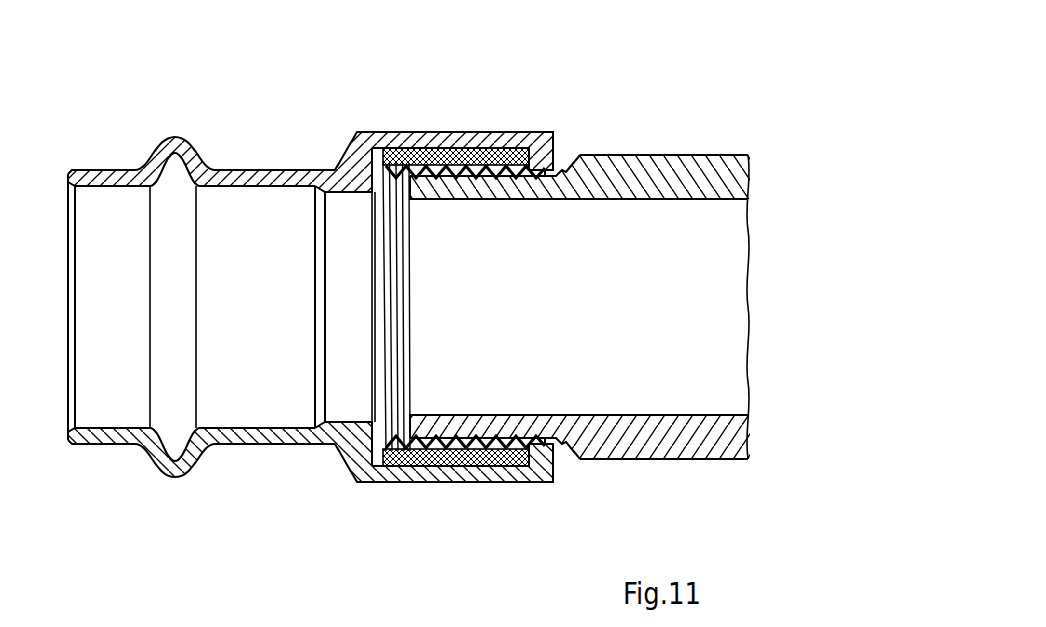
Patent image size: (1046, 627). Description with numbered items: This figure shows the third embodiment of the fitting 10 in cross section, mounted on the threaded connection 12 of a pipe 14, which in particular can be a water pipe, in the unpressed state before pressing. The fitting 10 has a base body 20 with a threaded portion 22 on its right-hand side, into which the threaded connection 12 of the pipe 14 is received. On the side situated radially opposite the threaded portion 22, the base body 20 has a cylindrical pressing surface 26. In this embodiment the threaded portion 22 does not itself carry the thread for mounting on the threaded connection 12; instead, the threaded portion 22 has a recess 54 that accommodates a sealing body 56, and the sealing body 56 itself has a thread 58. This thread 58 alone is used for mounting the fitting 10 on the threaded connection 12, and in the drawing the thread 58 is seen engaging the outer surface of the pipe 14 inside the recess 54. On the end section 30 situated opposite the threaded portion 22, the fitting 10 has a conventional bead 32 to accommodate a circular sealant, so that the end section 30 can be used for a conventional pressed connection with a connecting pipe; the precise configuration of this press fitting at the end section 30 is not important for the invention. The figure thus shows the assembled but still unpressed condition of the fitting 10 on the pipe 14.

The fitting 10 is at (282, 105).
The threaded connection 12 is at (558, 458).
The pipe 14 is at (715, 447).
The base body 20 is at (372, 152).
The threaded portion 22 is at (513, 140).
The pressing surface 26 is at (417, 130).
The end section 30 is at (103, 138).
The bead 32 is at (170, 138).
The recess 54 is at (413, 481).
The sealing body 56 is at (473, 466).
The thread 58 is at (507, 466).